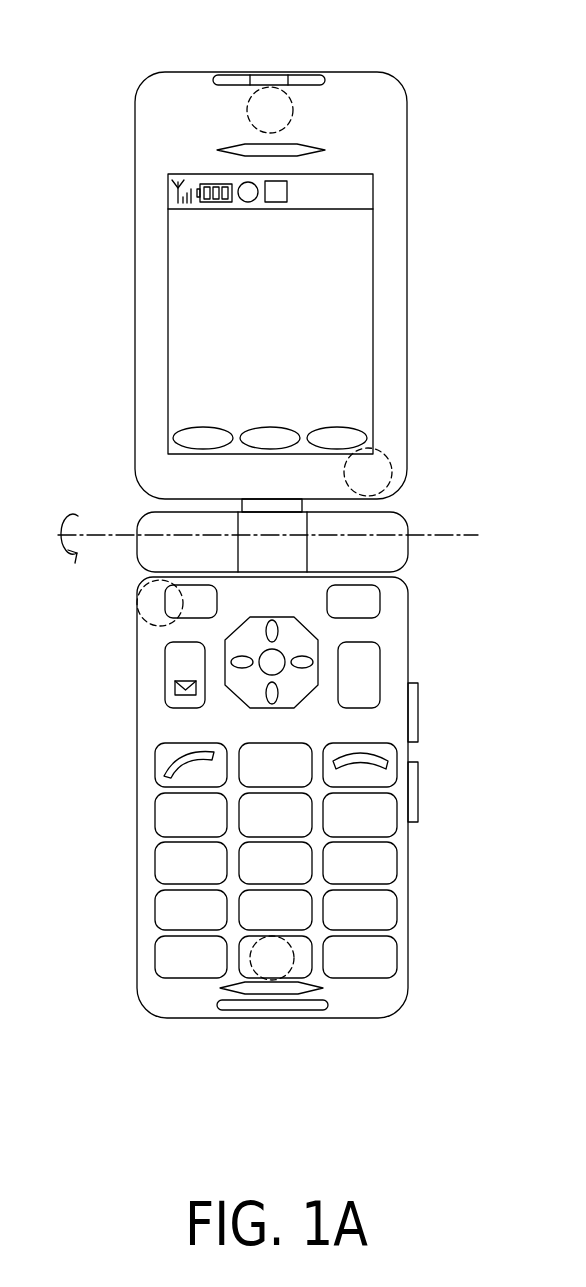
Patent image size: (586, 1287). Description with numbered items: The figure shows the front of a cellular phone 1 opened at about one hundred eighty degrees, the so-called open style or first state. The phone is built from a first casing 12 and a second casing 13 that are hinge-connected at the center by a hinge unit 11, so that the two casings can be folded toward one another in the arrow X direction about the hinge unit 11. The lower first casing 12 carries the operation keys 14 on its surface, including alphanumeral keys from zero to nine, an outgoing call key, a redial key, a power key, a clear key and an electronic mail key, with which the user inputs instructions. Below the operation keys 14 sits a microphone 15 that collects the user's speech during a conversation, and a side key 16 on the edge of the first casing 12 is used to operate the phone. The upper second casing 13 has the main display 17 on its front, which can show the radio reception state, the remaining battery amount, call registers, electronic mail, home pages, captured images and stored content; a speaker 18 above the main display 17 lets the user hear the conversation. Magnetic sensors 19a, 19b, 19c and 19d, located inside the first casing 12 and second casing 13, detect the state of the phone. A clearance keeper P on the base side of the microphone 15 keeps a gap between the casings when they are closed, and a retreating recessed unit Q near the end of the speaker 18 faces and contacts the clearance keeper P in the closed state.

The cellular phone 1 is at (266, 528).
The hinge unit 11 is at (404, 521).
The first casing 12 is at (409, 607).
The second casing 13 is at (390, 266).
The operation keys 14 is at (120, 600).
The microphone 15 is at (323, 988).
The side key 16 is at (418, 703).
The main display 17 is at (361, 231).
The speaker 18 is at (318, 147).
The magnetic sensor 19a is at (292, 104).
The magnetic sensor 19b is at (294, 951).
The magnetic sensor 19c is at (392, 466).
The magnetic sensor 19d is at (136, 587).
The retreating recessed unit Q is at (271, 44).
The clearance keeper (contact member) P is at (313, 1010).
The arrow X direction X is at (254, 538).